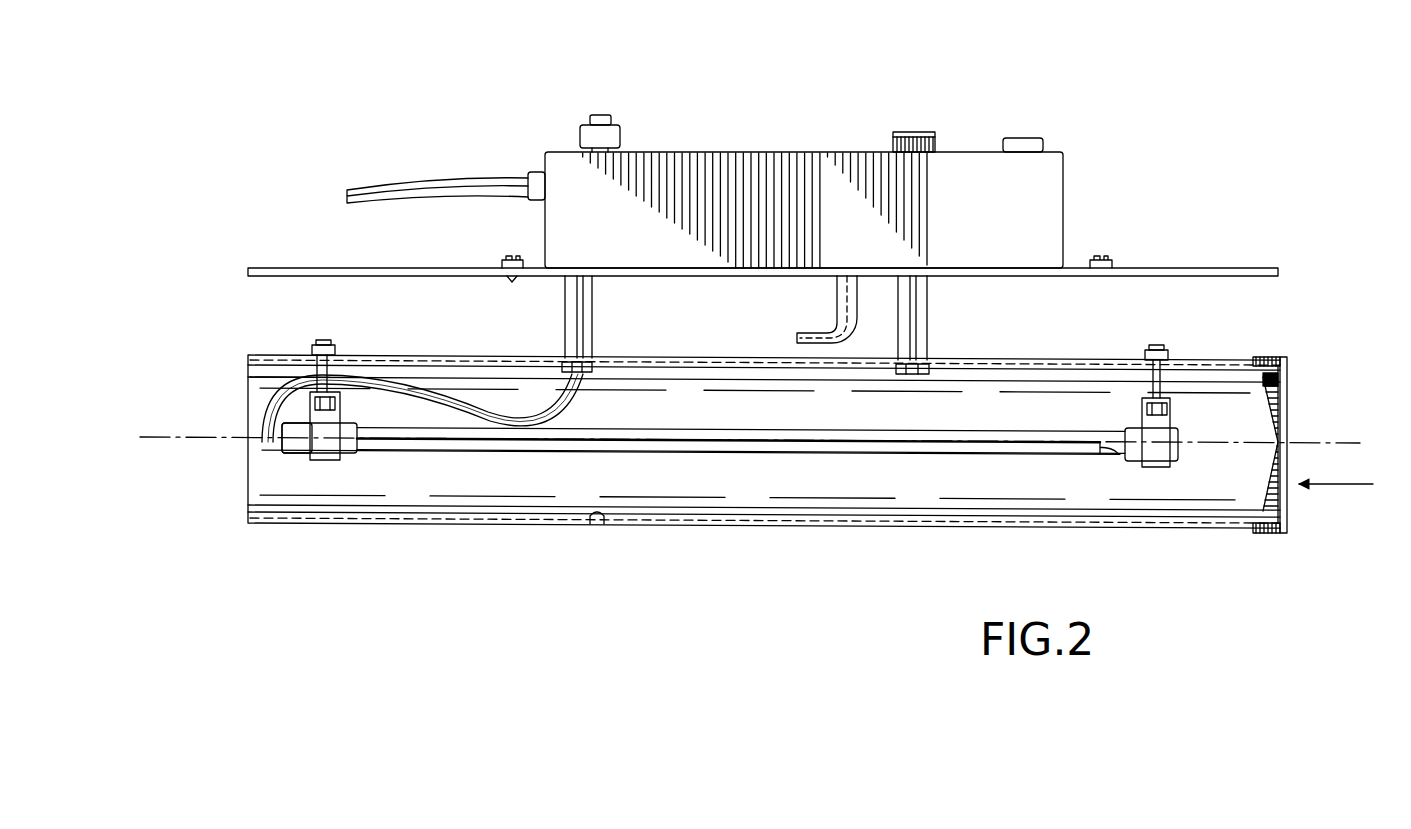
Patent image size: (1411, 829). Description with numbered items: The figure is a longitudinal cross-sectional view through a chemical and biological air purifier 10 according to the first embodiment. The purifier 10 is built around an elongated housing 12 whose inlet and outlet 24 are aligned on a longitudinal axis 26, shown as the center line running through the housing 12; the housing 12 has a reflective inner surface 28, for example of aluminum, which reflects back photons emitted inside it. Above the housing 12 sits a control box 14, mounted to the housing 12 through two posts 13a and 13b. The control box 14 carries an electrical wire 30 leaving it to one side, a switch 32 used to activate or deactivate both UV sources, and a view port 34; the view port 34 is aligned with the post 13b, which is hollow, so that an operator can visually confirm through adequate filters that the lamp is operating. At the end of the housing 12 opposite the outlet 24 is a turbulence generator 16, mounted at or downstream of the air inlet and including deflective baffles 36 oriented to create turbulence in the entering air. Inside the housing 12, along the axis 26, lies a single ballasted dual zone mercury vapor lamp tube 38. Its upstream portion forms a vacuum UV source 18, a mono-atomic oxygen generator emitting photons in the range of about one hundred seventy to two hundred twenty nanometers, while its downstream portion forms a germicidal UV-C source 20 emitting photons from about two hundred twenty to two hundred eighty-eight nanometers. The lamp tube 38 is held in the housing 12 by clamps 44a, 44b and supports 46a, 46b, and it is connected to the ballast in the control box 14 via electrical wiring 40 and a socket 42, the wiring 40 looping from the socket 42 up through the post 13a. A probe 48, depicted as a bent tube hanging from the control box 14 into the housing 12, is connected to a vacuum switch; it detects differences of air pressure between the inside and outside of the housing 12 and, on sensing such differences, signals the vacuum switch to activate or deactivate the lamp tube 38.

The chemical and biological air purifier 10 is at (192, 300).
The housing 12 is at (465, 526).
The post 13a is at (583, 333).
The post 13b is at (927, 318).
The control box 14 is at (770, 152).
The turbulence generator 16 is at (1291, 350).
The vacuum UV source 18 is at (1086, 465).
The germicidal UV-C source 20 is at (773, 455).
The outlet 24 is at (250, 378).
The longitudinal axis 26 is at (1333, 443).
The reflective inner surface 28 is at (597, 526).
The electrical wire 30 is at (430, 188).
The switch 32 is at (1020, 138).
The view port 34 is at (910, 132).
The deflective baffles 36 is at (1279, 382).
The dual zone mercury vapor lamp tube 38 is at (937, 460).
The electrical wiring 40 is at (457, 406).
The socket 42 is at (290, 443).
The clamp 44a is at (327, 460).
The clamp 44b is at (1160, 470).
The support 46a is at (319, 368).
The support 46b is at (1158, 382).
The probe 48 is at (810, 333).